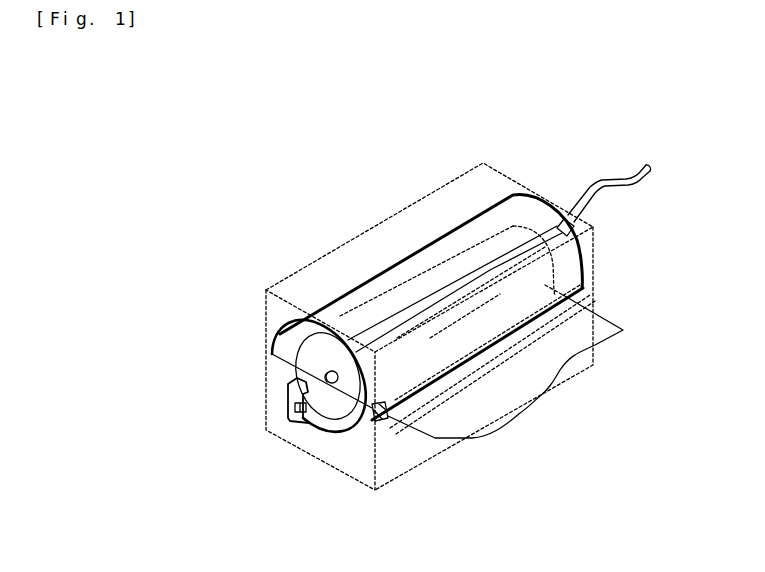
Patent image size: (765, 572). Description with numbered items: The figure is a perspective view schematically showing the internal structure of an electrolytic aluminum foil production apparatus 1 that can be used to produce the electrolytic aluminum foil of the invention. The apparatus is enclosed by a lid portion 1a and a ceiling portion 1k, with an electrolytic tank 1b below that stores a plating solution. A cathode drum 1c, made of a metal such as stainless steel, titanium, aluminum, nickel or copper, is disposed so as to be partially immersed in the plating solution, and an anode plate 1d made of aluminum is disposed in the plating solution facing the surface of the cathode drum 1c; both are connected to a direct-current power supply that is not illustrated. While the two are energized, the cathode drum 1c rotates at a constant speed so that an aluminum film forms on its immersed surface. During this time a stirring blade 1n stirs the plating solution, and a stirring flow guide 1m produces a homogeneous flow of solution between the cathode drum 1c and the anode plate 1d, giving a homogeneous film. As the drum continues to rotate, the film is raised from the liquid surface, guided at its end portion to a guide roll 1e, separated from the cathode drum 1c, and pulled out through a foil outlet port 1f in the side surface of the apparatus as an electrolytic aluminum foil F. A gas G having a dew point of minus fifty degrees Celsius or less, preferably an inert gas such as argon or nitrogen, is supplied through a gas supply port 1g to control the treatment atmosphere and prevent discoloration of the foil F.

The electrolytic aluminum foil production apparatus 1 is at (548, 452).
The lid portion 1a is at (436, 196).
The electrolytic tank 1b is at (352, 442).
The cathode drum 1c is at (325, 348).
The anode plate 1d is at (325, 425).
The guide roll 1e is at (386, 422).
The foil outlet port 1f is at (598, 278).
The gas supply port 1g is at (543, 237).
The ceiling portion 1k is at (522, 212).
The stirring flow guide 1m is at (288, 403).
The stirring blade 1n is at (295, 421).
The electrolytic aluminum foil F is at (600, 333).
The gas G is at (648, 163).